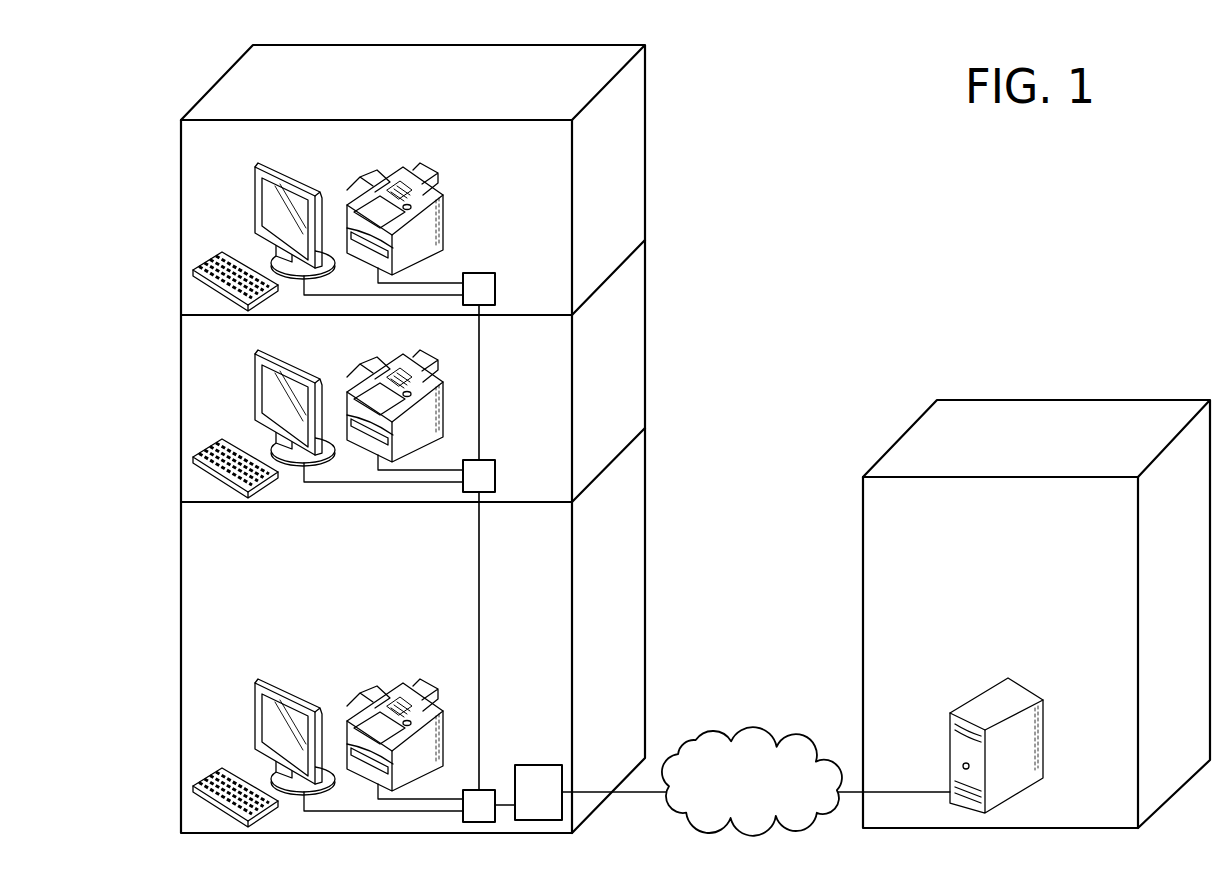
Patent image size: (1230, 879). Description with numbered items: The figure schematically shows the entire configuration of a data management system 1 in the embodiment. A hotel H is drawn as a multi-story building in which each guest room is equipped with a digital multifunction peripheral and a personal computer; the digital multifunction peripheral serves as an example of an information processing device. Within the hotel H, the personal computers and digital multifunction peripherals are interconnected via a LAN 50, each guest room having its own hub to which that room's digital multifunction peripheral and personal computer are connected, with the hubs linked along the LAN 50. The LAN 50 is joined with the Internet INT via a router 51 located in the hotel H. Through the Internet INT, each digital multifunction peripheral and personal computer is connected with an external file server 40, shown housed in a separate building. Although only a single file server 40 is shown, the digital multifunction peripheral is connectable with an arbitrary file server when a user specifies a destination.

The data management system 1 is at (843, 247).
The file server 40 is at (993, 702).
The LAN 50 is at (480, 633).
The router 51 is at (538, 765).
The hotel H is at (646, 190).
The Internet INT is at (715, 740).